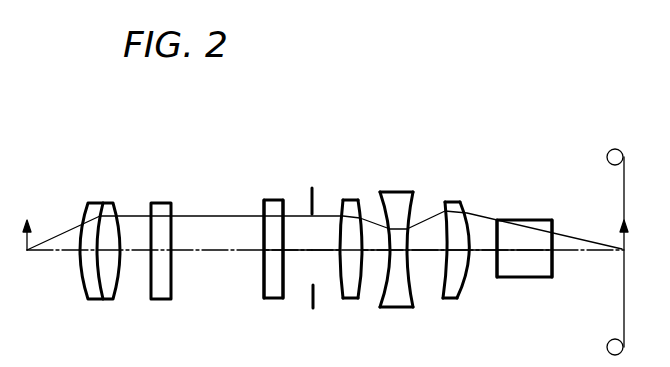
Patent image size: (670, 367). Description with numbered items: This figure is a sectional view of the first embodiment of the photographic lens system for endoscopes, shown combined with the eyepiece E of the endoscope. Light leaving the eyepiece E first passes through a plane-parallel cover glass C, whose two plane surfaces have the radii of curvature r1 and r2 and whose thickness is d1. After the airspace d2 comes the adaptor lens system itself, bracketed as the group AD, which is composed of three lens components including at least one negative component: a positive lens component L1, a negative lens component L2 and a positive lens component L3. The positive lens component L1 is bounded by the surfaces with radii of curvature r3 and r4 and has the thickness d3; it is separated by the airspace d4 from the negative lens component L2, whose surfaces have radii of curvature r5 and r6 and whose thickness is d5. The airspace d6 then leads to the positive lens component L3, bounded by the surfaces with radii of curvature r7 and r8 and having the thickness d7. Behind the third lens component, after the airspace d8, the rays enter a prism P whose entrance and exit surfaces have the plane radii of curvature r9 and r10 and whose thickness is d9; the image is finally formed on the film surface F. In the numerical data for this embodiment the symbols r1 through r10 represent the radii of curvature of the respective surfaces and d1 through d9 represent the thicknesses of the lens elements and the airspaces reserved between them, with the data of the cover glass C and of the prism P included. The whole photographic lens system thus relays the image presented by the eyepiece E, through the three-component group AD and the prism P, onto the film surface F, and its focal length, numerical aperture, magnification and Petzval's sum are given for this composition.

The eyepiece E is at (177, 173).
The cover glass C is at (271, 199).
The lens group AD is at (462, 103).
The positive lens component L1 is at (348, 200).
The negative lens component L2 is at (395, 192).
The positive lens component L3 is at (453, 202).
The prism P is at (528, 220).
The film surface F is at (625, 252).
The radius of curvature r1 is at (263, 213).
The radius of curvature r2 is at (283, 211).
The radius of curvature r3 is at (342, 212).
The radius of curvature r4 is at (359, 212).
The radius of curvature r5 is at (380, 199).
The radius of curvature r6 is at (413, 213).
The radius of curvature r7 is at (442, 210).
The radius of curvature r8 is at (461, 211).
The radius of curvature r9 is at (497, 220).
The radius of curvature r10 is at (552, 228).
The thickness d1 is at (272, 250).
The airspace d2 is at (300, 251).
The thickness d3 is at (348, 256).
The airspace d4 is at (370, 250).
The thickness d5 is at (400, 252).
The airspace d6 is at (420, 251).
The thickness d7 is at (455, 252).
The airspace d8 is at (478, 252).
The thickness d9 is at (523, 251).